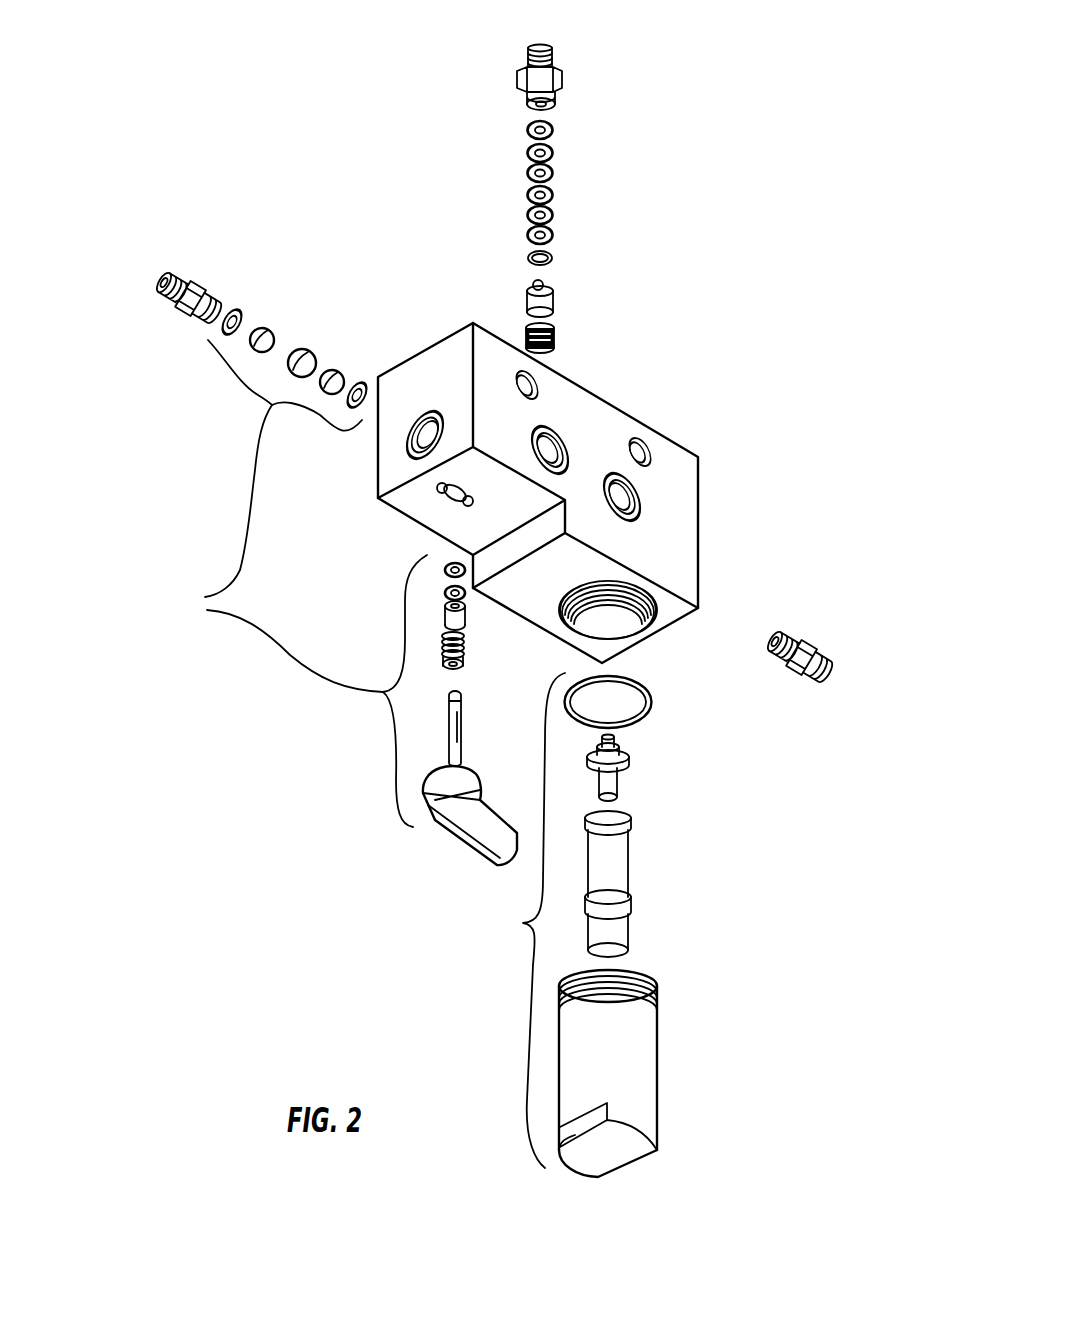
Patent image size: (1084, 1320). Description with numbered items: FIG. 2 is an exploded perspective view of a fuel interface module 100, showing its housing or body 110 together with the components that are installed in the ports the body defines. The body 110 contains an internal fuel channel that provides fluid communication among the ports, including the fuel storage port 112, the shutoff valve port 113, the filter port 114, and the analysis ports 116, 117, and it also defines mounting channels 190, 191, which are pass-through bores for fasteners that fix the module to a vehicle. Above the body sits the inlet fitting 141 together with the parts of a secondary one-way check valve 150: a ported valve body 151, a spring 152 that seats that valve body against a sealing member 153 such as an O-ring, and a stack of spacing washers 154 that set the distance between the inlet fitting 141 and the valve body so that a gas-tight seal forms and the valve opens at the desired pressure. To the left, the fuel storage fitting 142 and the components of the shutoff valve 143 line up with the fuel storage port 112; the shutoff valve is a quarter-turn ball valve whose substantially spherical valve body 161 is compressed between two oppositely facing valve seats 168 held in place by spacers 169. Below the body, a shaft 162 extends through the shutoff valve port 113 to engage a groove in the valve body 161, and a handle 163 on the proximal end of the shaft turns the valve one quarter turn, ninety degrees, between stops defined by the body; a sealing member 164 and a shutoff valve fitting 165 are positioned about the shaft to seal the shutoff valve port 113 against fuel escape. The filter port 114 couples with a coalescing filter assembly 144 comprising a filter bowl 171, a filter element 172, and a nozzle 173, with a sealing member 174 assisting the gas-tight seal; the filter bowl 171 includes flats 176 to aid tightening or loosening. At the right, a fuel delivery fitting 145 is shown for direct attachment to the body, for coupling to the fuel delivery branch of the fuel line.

The fuel interface module 100 is at (223, 133).
The body 110 is at (673, 550).
The fuel storage port 112 is at (376, 377).
The shutoff valve port 113 is at (461, 470).
The filter port 114 is at (640, 619).
The analysis port 116 is at (570, 433).
The analysis port 117 is at (656, 490).
The inlet fitting 141 is at (562, 68).
The fuel storage fitting 142 is at (173, 322).
The shutoff valve 143 is at (298, 583).
The filter assembly 144 is at (523, 923).
The fuel delivery fitting 145 is at (826, 653).
The one-way check valve 150 is at (508, 118).
The valve body 151 is at (548, 296).
The spring 152 is at (550, 335).
The sealing member 153 is at (553, 258).
The spacing washers 154 is at (558, 118).
The valve body 161 is at (305, 350).
The shaft 162 is at (458, 720).
The handle 163 is at (462, 828).
The sealing member 164 is at (415, 405).
The shutoff valve fitting 165 is at (468, 650).
The valve seats 168 is at (266, 327).
The spacers 169 is at (235, 308).
The filter bowl 171 is at (620, 1063).
The filter element 172 is at (614, 870).
The nozzle 173 is at (614, 780).
The sealing member 174 is at (635, 722).
The flats 176 is at (606, 1108).
The mounting channel 190 is at (544, 381).
The mounting channel 191 is at (659, 441).